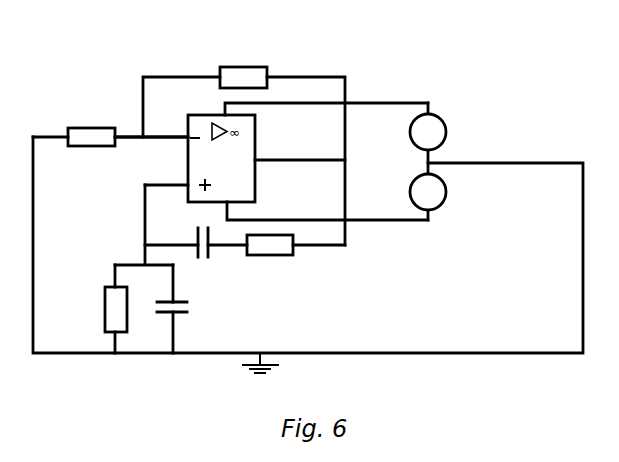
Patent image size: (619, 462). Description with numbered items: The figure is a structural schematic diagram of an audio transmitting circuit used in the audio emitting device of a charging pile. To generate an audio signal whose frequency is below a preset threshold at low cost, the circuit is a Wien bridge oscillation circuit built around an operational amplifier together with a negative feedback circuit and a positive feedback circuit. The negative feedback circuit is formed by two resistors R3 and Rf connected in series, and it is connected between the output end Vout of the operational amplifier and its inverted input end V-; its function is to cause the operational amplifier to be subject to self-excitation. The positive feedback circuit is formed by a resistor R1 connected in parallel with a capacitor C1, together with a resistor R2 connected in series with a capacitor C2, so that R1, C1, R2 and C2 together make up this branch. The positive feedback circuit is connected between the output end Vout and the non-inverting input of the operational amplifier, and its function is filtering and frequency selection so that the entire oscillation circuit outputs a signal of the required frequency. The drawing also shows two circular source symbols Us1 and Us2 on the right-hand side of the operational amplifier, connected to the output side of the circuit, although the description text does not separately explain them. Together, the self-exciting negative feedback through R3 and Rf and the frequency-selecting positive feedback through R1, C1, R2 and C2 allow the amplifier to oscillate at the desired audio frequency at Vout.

The resistor R1 is at (98, 309).
The resistor R2 is at (204, 259).
The resistor R3 is at (91, 123).
The resistor Rf is at (243, 58).
The capacitor C1 is at (191, 314).
The capacitor C2 is at (270, 263).
The voltage source Us1 is at (455, 124).
The voltage source Us2 is at (455, 210).
The inverted input end V- is at (151, 122).
The output end Vout is at (300, 143).